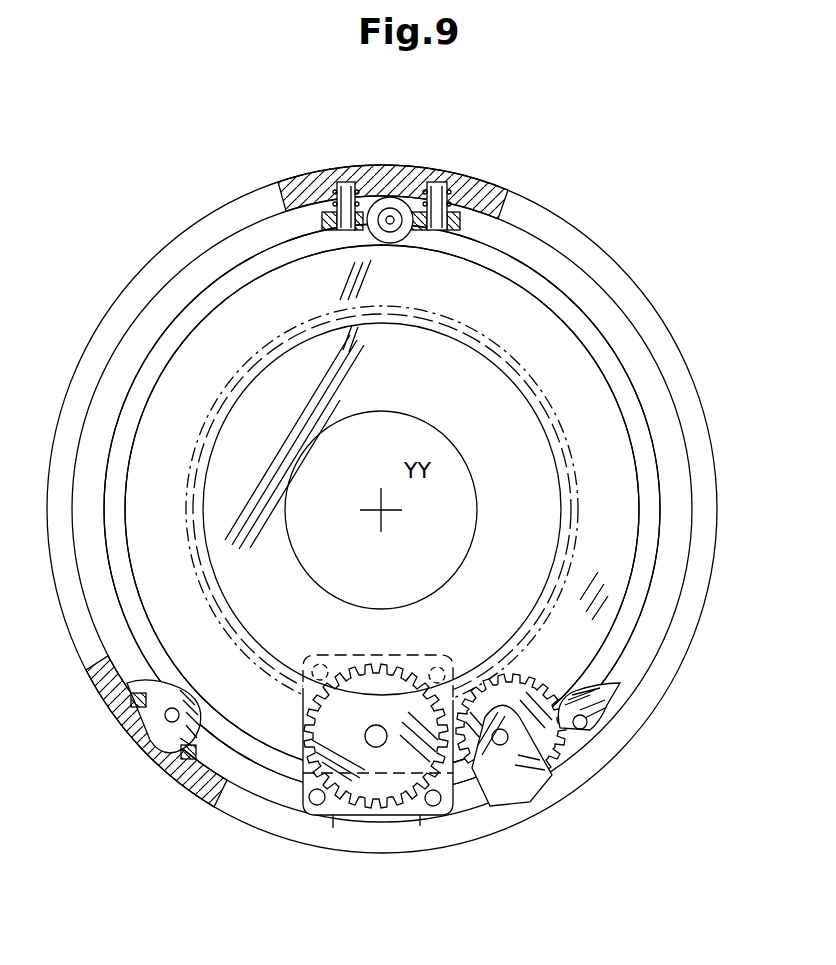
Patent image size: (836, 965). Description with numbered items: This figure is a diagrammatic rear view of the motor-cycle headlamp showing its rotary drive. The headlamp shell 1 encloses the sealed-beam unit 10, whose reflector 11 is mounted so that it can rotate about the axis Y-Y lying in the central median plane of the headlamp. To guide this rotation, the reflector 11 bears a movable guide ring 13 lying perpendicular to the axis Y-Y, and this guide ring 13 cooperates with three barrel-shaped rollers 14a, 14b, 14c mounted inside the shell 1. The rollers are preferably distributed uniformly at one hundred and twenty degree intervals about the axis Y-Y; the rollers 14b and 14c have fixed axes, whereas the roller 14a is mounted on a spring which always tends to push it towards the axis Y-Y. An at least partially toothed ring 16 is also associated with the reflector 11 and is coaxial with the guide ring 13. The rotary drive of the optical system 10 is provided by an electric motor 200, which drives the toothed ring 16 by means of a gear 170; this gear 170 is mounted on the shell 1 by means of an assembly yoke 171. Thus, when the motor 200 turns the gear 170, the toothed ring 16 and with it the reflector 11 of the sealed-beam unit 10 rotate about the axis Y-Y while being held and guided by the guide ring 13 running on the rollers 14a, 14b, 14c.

The headlamp shell 1 is at (580, 236).
The reflector 11 is at (613, 347).
The sealed-beam unit 10 is at (382, 509).
The guide ring 13 is at (147, 414).
The roller 14a is at (396, 245).
The roller 14b is at (127, 692).
The roller 14c is at (600, 700).
The toothed ring 16 is at (503, 665).
The gear 170 is at (456, 792).
The assembly yoke 171 is at (490, 778).
The electric motor 200 is at (343, 806).